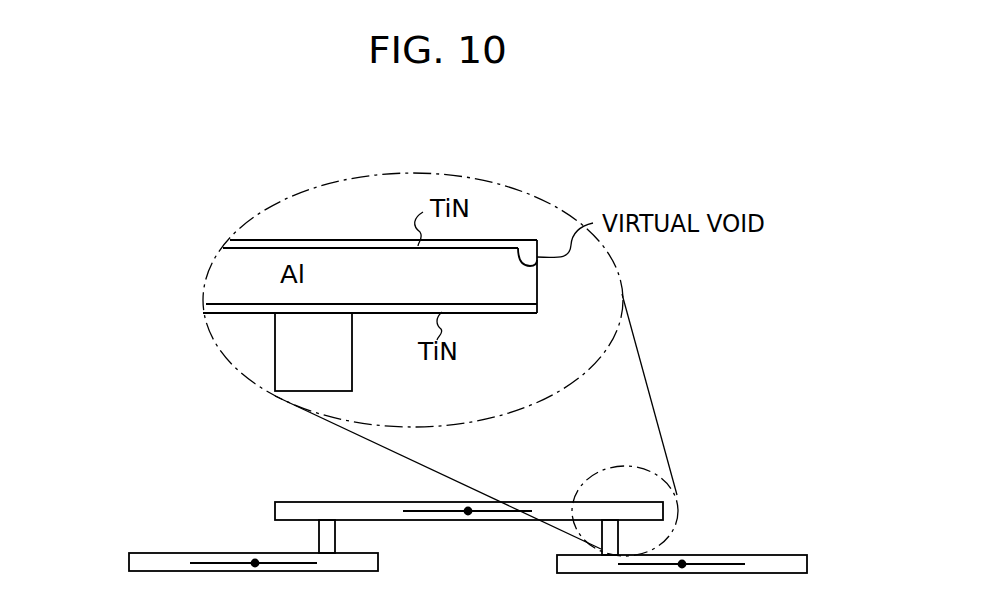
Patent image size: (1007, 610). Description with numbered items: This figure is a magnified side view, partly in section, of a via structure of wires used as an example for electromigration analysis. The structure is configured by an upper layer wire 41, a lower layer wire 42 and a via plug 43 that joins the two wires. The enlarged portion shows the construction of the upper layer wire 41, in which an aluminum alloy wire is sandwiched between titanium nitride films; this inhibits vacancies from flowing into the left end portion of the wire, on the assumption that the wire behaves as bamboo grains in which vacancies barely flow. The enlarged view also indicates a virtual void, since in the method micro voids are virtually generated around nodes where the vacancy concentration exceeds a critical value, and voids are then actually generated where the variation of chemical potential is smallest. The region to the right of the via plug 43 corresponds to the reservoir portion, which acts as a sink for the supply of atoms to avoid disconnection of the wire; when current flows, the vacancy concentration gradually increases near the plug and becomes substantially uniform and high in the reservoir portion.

The upper layer wire 41 is at (305, 508).
The lower layer wire 42 is at (148, 558).
The via plug 43 is at (623, 537).